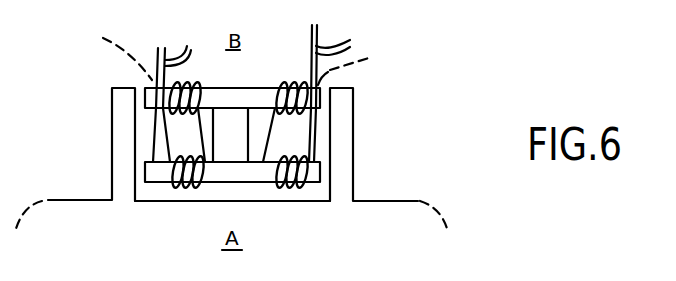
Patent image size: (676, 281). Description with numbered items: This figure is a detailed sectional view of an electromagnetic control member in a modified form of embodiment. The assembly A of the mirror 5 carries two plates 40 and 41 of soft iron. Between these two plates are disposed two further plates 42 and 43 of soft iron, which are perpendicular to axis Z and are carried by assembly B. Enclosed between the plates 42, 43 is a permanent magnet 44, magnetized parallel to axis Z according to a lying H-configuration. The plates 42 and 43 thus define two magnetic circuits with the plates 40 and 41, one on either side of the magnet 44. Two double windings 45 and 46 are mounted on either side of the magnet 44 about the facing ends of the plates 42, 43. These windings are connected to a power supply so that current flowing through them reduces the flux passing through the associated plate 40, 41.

The mirror 5 is at (233, 169).
The plate of soft iron 40 is at (121, 156).
The plate of soft iron 41 is at (344, 160).
The plate of soft iron 42 is at (262, 90).
The plate of soft iron 43 is at (223, 179).
The permanent magnet 44 is at (219, 128).
The double winding 45 is at (179, 95).
The double winding 46 is at (341, 93).